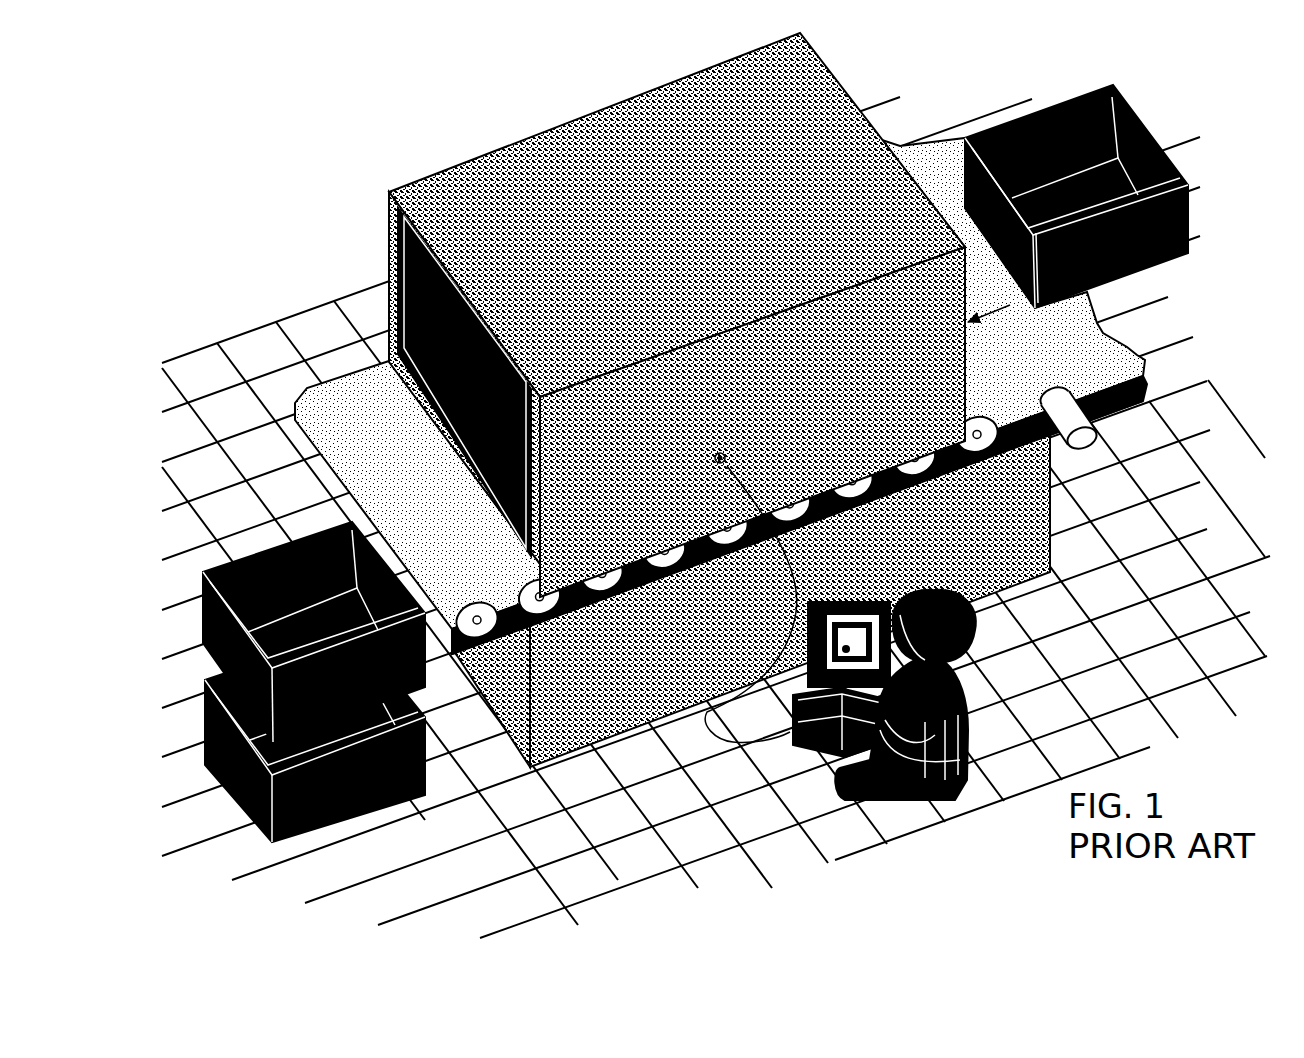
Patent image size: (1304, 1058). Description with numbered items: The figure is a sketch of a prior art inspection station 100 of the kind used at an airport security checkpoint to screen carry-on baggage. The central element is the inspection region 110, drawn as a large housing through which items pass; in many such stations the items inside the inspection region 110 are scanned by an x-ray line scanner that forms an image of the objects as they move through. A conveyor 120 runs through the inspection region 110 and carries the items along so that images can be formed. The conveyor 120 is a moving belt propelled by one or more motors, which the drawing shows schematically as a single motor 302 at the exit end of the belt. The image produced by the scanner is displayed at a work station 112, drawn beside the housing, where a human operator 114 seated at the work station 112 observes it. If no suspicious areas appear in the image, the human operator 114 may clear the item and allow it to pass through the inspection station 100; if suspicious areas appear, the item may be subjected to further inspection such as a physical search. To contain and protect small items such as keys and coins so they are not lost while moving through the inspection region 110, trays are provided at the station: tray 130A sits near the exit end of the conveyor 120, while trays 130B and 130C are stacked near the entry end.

The inspection station 100 is at (366, 128).
The inspection region 110 is at (607, 142).
The work station 112 is at (795, 750).
The human operator 114 is at (871, 800).
The conveyor 120 is at (443, 491).
The tray 130A is at (1113, 85).
The tray 130B is at (263, 550).
The tray 130C is at (245, 800).
The motor 302 is at (1088, 448).